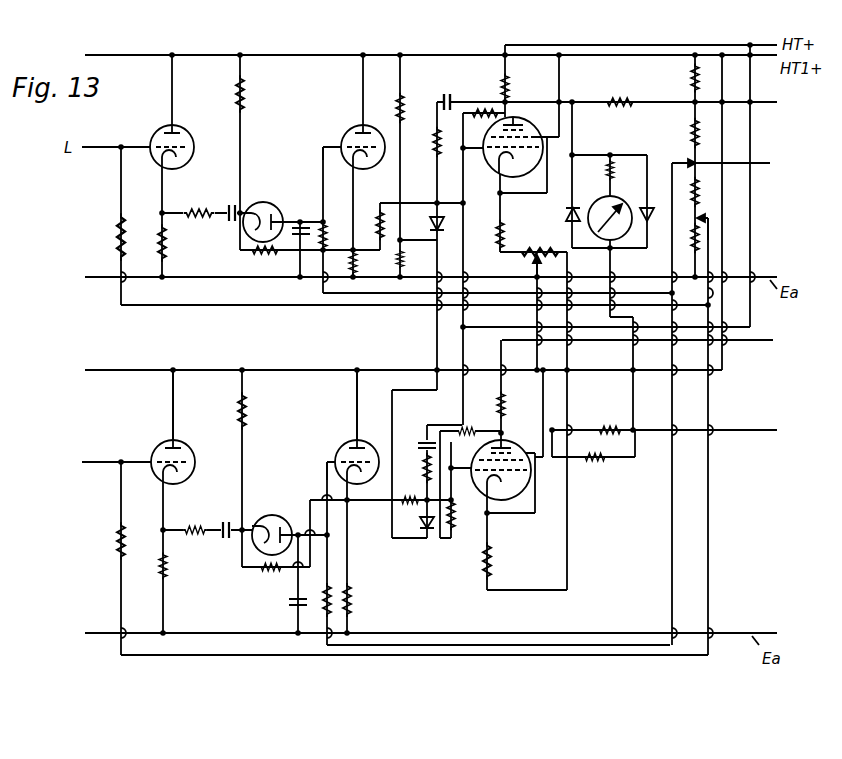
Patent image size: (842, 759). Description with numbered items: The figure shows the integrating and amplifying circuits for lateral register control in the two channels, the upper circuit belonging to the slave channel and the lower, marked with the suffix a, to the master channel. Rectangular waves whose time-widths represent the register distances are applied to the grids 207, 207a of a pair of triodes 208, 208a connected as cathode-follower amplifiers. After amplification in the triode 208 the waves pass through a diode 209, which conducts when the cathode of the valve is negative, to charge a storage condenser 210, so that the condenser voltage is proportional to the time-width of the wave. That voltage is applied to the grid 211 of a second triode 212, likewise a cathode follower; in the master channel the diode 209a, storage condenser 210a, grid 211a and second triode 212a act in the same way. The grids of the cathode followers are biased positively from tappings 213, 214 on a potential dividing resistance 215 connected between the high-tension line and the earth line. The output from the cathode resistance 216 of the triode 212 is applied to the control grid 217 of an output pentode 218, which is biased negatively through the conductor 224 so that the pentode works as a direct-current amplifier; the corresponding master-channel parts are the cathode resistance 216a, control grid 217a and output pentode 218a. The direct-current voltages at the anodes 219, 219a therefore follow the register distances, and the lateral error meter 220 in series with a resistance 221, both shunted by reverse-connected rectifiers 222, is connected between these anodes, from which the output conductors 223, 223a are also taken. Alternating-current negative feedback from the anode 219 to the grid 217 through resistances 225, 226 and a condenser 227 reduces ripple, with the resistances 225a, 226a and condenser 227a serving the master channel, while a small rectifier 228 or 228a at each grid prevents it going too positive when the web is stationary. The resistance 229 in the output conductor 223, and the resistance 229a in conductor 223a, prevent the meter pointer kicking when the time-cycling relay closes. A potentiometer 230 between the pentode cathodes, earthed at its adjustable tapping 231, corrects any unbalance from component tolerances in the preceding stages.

The grid 207 is at (152, 135).
The triode 208 is at (195, 134).
The second triode 212 is at (348, 131).
The grid 211 is at (336, 149).
The diode 209 is at (298, 196).
The storage condenser 210 is at (308, 227).
The cathode resistance 216 is at (358, 268).
The resistance 226 is at (431, 151).
The small rectifier 228 is at (434, 214).
The condenser 227 is at (444, 98).
The resistance 225 is at (485, 108).
The anode 219 is at (513, 121).
The control grid 217 is at (506, 160).
The output pentode 218 is at (513, 184).
The adjustable tapping 231 is at (554, 247).
The potentiometer 230 is at (529, 261).
The resistance 229 is at (630, 93).
The resistance 221 is at (608, 162).
The lateral error meter 220 is at (625, 206).
The reverse-connected rectifiers 222 is at (580, 226).
The potential dividing resistance 215 is at (689, 136).
The output conductor 223 is at (766, 103).
The tapping 214 is at (696, 163).
The tapping 213 is at (709, 217).
The conductor 224 is at (498, 333).
The grid 207a is at (153, 458).
The triode 208a is at (182, 446).
The second triode 212a is at (345, 443).
The grid 211a is at (337, 460).
The diode 209a is at (291, 506).
The storage condenser 210a is at (289, 602).
The cathode resistance 216a is at (357, 600).
The resistance 226a is at (421, 470).
The condenser 227a is at (424, 440).
The resistance 225a is at (463, 428).
The small rectifier 228a is at (423, 534).
The anode 219a is at (511, 443).
The control grid 217a is at (530, 478).
The output pentode 218a is at (515, 498).
The resistance 229a is at (612, 428).
The output conductor 223a is at (770, 430).